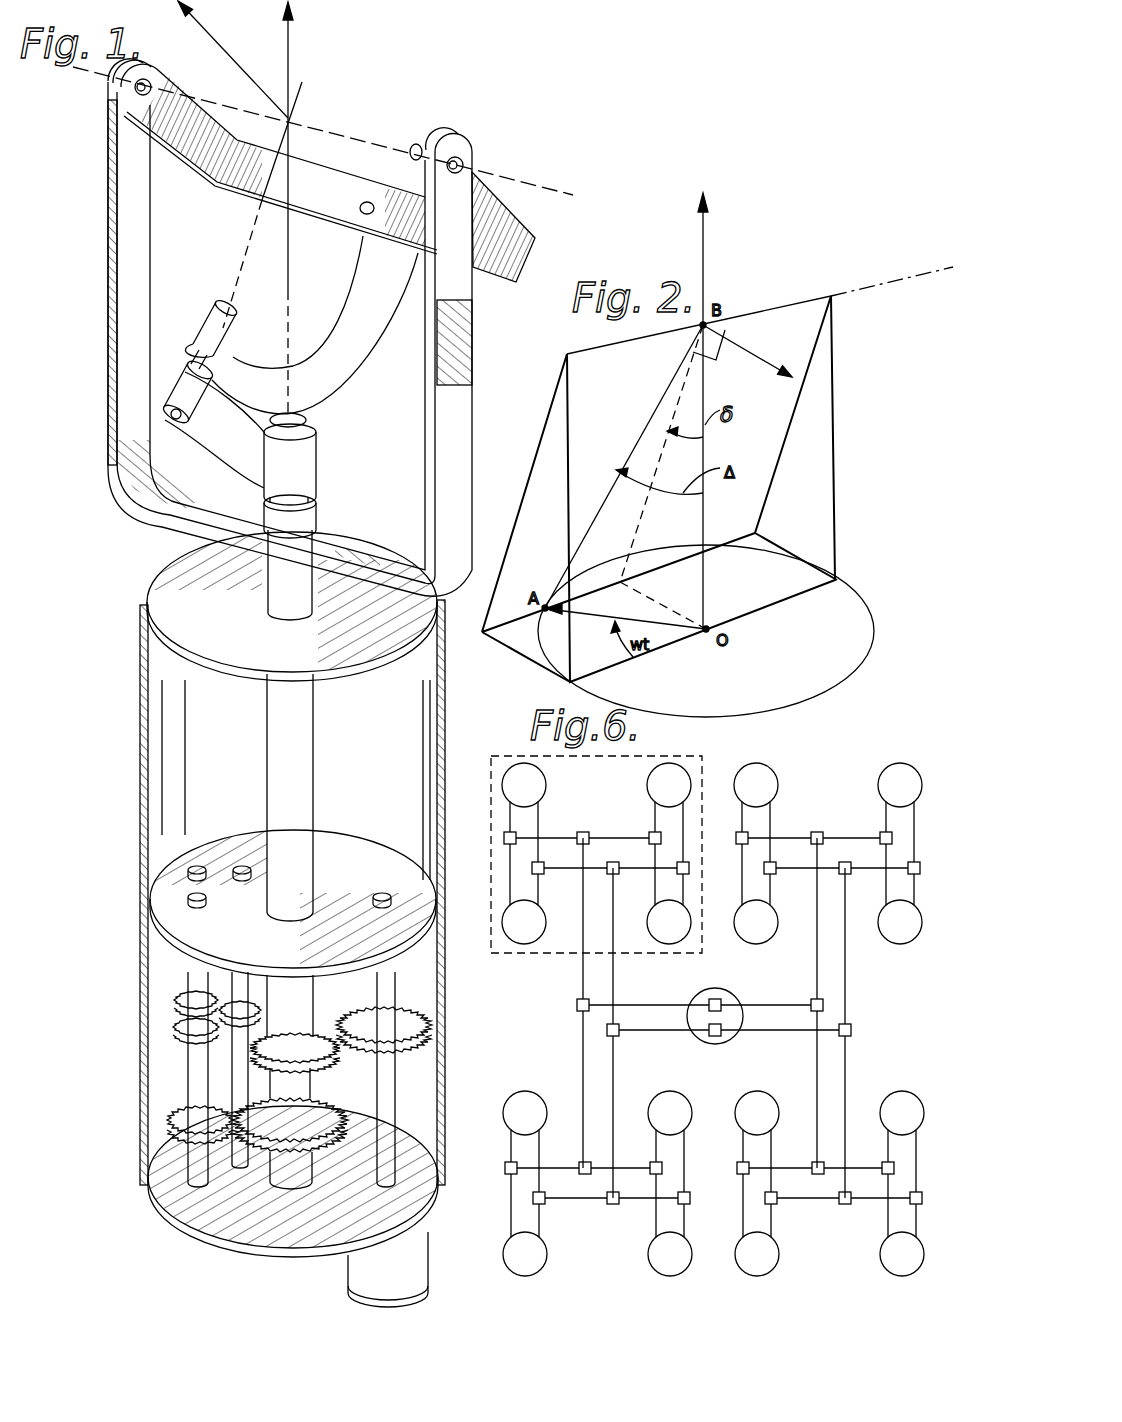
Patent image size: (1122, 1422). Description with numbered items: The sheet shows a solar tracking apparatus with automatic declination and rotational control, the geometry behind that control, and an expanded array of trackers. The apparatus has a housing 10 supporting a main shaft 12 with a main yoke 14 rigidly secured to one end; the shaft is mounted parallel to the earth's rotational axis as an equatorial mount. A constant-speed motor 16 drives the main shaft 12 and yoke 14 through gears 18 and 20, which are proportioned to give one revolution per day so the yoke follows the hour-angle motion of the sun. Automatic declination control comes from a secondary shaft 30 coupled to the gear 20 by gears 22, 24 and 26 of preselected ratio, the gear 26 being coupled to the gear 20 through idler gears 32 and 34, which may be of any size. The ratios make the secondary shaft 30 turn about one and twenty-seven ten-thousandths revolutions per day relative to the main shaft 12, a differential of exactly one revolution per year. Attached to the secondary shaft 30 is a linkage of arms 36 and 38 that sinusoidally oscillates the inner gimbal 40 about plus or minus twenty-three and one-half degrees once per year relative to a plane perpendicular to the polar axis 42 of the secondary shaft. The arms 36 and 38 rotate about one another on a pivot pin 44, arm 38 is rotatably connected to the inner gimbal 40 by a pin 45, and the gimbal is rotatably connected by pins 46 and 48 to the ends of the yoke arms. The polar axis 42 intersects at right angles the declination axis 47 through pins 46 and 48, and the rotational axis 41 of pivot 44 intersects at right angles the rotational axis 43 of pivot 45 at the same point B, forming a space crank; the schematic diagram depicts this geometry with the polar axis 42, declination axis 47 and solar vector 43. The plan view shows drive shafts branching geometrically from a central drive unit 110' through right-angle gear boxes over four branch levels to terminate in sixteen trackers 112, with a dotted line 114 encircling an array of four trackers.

In FIG. 1, the housing 10 is at (142, 743).
In FIG. 1, the main shaft 12 is at (318, 770).
In FIG. 1, the main yoke 14 is at (458, 390).
In FIG. 1, the constant-speed motor 16 is at (367, 1275).
In FIG. 1, the gear 18 is at (418, 1017).
In FIG. 1, the gear 20 is at (333, 1012).
In FIG. 1, the gear 22 is at (257, 1153).
In FIG. 1, the gear 24 is at (170, 1117).
In FIG. 1, the gear 26 is at (178, 1033).
In FIG. 1, the secondary shaft 30 is at (293, 1173).
In FIG. 1, the idler gear 32 is at (178, 998).
In FIG. 1, the idler gear 34 is at (263, 1040).
In FIG. 1, the linkage arm 36 is at (237, 460).
In FIG. 1, the linkage arm 38 is at (338, 365).
In FIG. 1, the inner gimbal 40 is at (517, 240).
In FIG. 1, the rotational axis of pivot 44 41 is at (303, 93).
In FIG. 1, the polar axis 42 is at (290, 54).
In FIG. 2, the polar axis 42 is at (697, 250).
In FIG. 1, the rotational axis of pivot 45 43 is at (212, 27).
In FIG. 2, the rotational axis of pivot 45 43 is at (768, 350).
In FIG. 1, the pivot pin 44 is at (223, 298).
In FIG. 1, the pin 45 is at (368, 202).
In FIG. 1, the pin 46 is at (460, 160).
In FIG. 1, the declination axis 47 is at (538, 176).
In FIG. 2, the declination axis 47 is at (756, 310).
In FIG. 1, the pin 48 is at (146, 80).
In FIG. 6, the tracker 112 is at (535, 785).
In FIG. 6, the dotted line 114 is at (567, 955).
In FIG. 6, the central drive unit 110' is at (714, 1018).